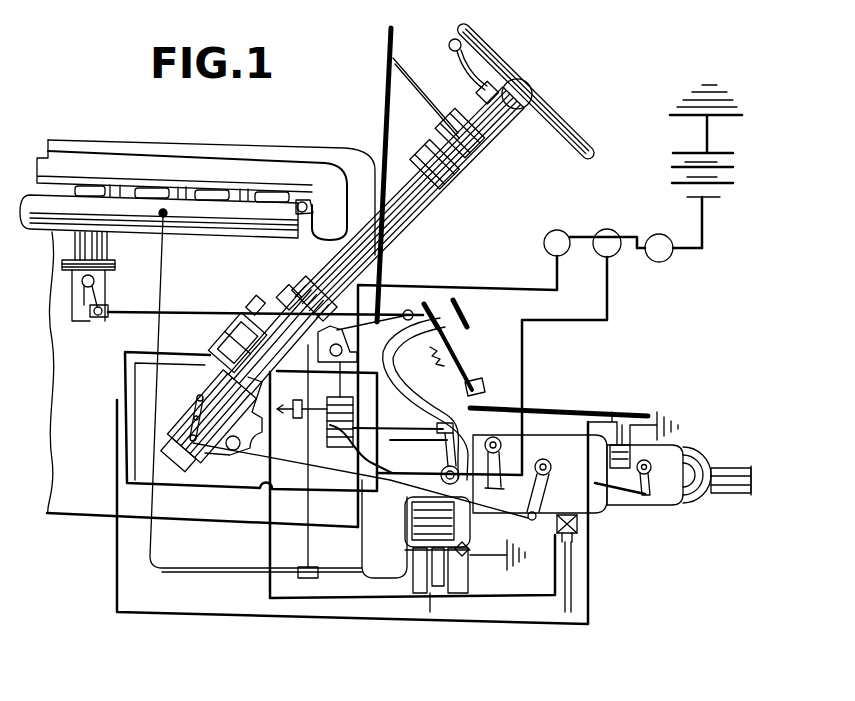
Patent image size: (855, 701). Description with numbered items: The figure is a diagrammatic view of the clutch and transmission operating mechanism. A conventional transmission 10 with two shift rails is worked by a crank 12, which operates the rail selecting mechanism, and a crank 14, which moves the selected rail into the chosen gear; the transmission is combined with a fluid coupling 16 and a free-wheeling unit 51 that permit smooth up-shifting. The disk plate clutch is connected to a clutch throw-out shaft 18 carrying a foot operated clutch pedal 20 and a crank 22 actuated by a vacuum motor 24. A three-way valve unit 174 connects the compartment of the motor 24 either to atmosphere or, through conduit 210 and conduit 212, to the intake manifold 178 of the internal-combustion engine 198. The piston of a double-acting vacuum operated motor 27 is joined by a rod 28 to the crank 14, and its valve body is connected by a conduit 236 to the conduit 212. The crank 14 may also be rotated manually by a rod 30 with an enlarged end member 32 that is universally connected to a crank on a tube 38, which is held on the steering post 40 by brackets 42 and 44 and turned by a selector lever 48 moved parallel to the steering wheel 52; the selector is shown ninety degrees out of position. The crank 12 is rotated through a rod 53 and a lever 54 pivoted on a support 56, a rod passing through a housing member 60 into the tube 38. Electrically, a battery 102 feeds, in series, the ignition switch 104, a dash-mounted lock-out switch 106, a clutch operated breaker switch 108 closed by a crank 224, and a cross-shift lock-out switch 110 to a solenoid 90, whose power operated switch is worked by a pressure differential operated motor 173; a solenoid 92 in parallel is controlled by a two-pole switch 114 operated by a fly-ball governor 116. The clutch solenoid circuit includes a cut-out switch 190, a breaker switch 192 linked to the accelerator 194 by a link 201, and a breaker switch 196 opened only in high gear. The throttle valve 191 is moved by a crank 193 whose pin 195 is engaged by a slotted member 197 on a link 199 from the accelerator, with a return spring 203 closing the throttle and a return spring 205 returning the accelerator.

The transmission 10 is at (557, 443).
The crank 12 is at (505, 470).
The crank 14 is at (556, 500).
The fluid coupling 16 is at (383, 563).
The clutch throw-out shaft 18 is at (480, 452).
The clutch pedal 20 is at (466, 315).
The crank 22 is at (472, 428).
The vacuum motor 24 is at (353, 388).
The vacuum operated motor 27 is at (390, 520).
The rod 28 is at (492, 525).
The rod 30 is at (531, 480).
The enlarged end member 32 is at (262, 303).
The tube 38 is at (399, 182).
The steering post 40 is at (420, 214).
The bracket 42 is at (298, 292).
The bracket 44 is at (450, 178).
The selector lever 48 is at (449, 47).
The free-wheeling unit 51 is at (650, 483).
The steering wheel 52 is at (567, 125).
The rod 53 is at (253, 457).
The lever 54 is at (187, 423).
The support 56 is at (167, 457).
The housing member 60 is at (215, 352).
The solenoid 90 is at (420, 587).
The solenoid 92 is at (442, 553).
The battery 102 is at (730, 178).
The ignition switch 104 is at (666, 262).
The lock-out switch 106 is at (614, 262).
The breaker switch 108 is at (373, 453).
The cross-shift lock-out switch 110 is at (235, 338).
The two-pole switch 114 is at (572, 553).
The fly-ball governor 116 is at (552, 540).
The pressure differential operated motor 173 is at (460, 587).
The three-way valve unit 174 is at (300, 420).
The intake manifold 178 is at (90, 207).
The cut-out switch 190 is at (544, 244).
The throttle valve 191 is at (100, 280).
The breaker switch 192 is at (385, 292).
The crank 193 is at (78, 293).
The accelerator 194 is at (455, 350).
The pin 195 is at (95, 318).
The breaker switch 196 is at (630, 400).
The slotted member 197 is at (103, 320).
The internal-combustion engine 198 is at (83, 497).
The link 199 is at (240, 310).
The link 201 is at (431, 307).
The return spring 203 is at (112, 303).
The return spring 205 is at (460, 342).
The conduit 210 is at (305, 512).
The conduit 212 is at (187, 570).
The crank 224 is at (390, 427).
The conduit 236 is at (347, 575).